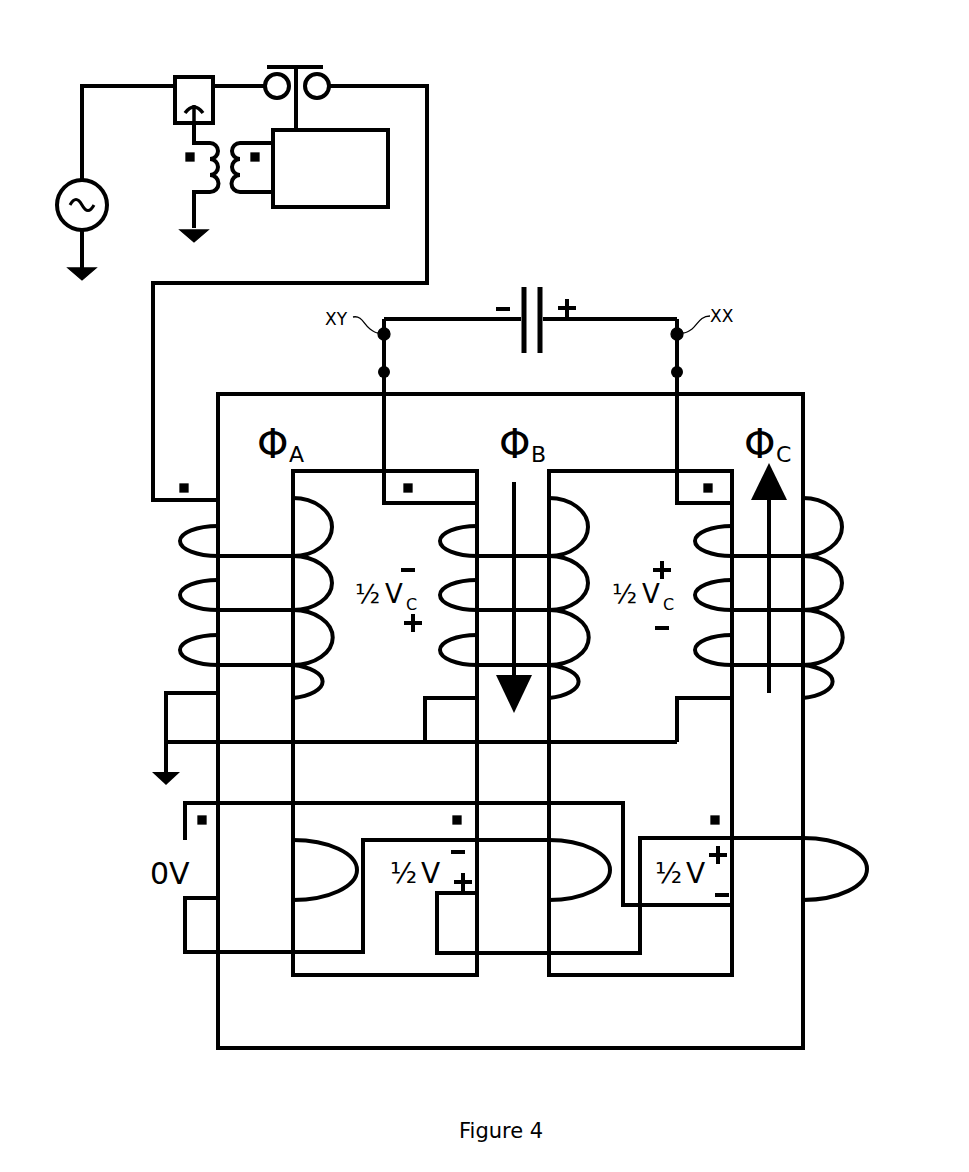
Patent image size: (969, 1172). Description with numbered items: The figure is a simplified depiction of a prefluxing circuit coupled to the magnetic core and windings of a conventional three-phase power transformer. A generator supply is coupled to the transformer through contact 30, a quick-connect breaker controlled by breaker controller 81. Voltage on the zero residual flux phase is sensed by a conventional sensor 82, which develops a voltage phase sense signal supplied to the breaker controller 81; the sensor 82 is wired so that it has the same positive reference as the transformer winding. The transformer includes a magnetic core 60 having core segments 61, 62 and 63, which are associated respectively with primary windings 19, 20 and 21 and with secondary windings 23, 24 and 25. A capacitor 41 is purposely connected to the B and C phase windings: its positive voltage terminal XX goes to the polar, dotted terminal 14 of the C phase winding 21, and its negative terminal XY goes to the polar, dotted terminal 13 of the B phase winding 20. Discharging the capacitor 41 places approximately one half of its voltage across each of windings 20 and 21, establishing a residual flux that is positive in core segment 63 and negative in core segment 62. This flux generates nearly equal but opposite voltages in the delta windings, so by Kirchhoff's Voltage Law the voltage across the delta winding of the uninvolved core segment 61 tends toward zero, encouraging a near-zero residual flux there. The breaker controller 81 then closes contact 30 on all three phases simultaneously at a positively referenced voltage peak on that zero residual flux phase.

The sensor 82 is at (190, 75).
The contact 30 is at (293, 63).
The breaker controller 81 is at (310, 208).
The capacitor 41 is at (544, 295).
The polar terminal of B phase winding 13 is at (378, 371).
The polar terminal of C phase winding 14 is at (672, 371).
The magnetic core 60 is at (750, 391).
The primary winding 19 is at (333, 512).
The primary winding 20 is at (588, 512).
The primary winding 21 is at (818, 505).
The core segment 61 is at (267, 710).
The core segment 62 is at (530, 713).
The core segment 63 is at (778, 718).
The secondary winding 23 is at (318, 840).
The secondary winding 24 is at (572, 838).
The secondary winding 25 is at (821, 838).